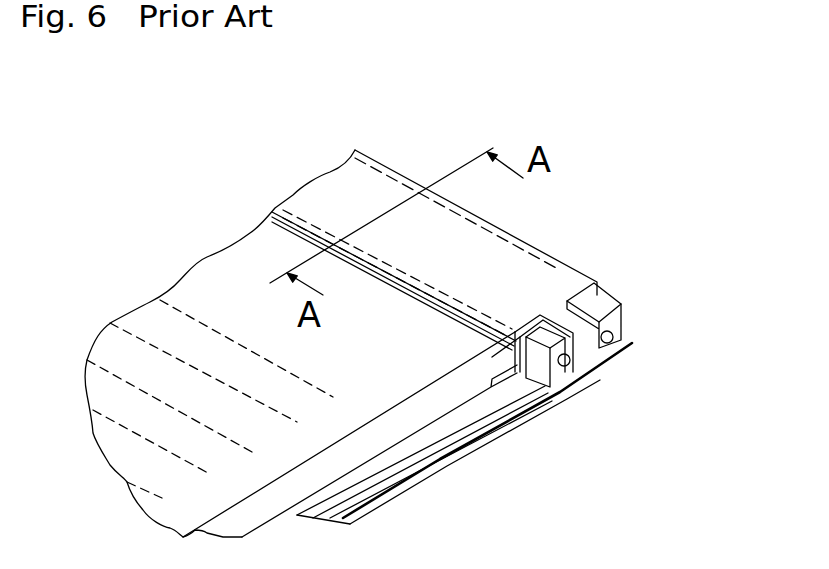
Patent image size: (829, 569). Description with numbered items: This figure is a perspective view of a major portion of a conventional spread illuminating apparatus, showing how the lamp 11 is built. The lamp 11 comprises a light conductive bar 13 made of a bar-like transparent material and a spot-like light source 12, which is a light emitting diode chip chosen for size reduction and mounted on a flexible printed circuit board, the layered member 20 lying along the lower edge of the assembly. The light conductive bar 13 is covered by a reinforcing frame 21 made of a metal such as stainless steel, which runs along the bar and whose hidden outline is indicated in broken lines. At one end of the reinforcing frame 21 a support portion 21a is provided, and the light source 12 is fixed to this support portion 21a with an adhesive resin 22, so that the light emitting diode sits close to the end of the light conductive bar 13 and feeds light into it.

The lamp 11 is at (722, 198).
The spot-like light source 12 is at (620, 303).
The light conductive bar 13 is at (528, 300).
The flat cable stack 20 is at (465, 437).
The reinforcing frame 21 is at (527, 238).
The support portion 21a is at (582, 350).
The adhesive resin 22 is at (565, 380).